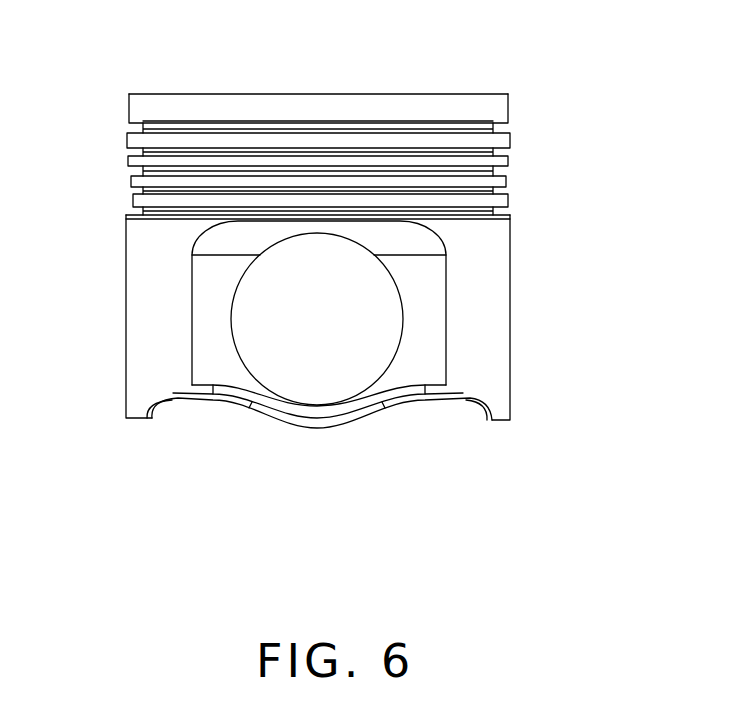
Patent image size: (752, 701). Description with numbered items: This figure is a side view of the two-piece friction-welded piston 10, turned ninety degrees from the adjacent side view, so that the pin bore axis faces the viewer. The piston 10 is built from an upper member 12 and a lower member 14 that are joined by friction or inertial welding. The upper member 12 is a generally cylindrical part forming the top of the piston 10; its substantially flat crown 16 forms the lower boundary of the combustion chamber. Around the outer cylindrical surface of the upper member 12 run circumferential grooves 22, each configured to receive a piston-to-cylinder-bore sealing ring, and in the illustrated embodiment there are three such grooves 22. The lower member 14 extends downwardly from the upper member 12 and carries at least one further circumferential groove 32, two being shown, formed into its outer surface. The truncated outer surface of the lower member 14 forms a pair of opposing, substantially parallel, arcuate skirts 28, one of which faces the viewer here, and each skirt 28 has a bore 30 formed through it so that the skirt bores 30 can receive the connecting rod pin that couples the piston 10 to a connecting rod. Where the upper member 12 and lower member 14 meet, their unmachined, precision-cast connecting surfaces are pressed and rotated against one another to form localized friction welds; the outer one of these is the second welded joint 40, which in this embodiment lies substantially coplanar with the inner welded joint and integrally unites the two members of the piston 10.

The piston 10 is at (679, 108).
The upper member 12 is at (503, 109).
The lower member 14 is at (495, 332).
The crown 16 is at (468, 95).
The circumferential groove 22 is at (507, 153).
The skirt 28 is at (222, 363).
The bore 30 is at (300, 368).
The groove 32 is at (498, 210).
The second welded joint 40 is at (143, 173).